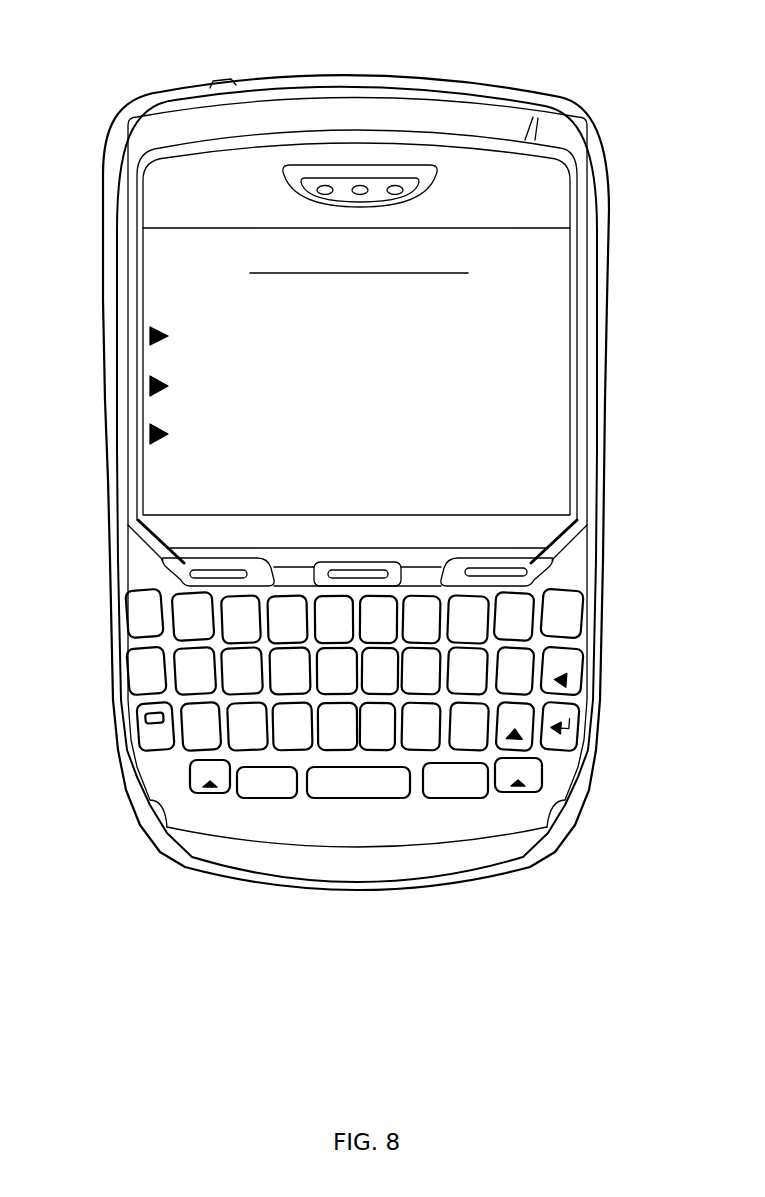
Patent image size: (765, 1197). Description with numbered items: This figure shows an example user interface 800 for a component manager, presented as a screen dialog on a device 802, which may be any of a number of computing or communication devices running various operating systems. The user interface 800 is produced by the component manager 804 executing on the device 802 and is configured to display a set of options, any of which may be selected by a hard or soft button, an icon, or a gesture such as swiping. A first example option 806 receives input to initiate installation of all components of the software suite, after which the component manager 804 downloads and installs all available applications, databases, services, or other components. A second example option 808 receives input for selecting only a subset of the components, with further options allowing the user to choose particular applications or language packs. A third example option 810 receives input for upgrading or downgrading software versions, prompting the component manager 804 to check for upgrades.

The user interface 800 is at (485, 240).
The device 802 is at (200, 36).
The component manager 804 is at (162, 263).
The first example option 806 is at (435, 335).
The second example option 808 is at (492, 381).
The third example option 810 is at (495, 430).